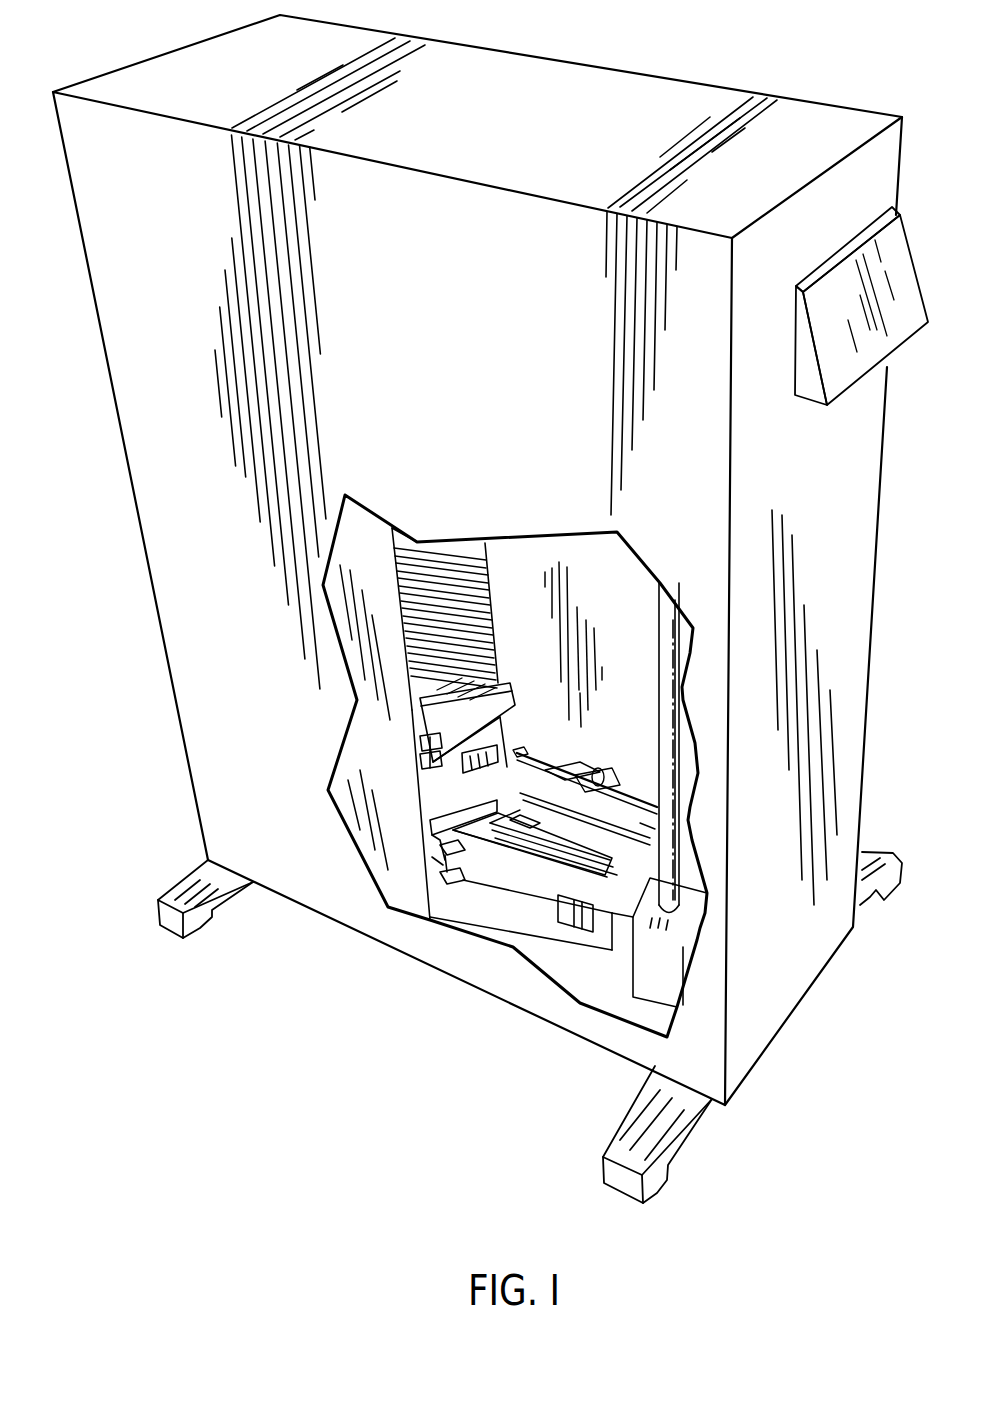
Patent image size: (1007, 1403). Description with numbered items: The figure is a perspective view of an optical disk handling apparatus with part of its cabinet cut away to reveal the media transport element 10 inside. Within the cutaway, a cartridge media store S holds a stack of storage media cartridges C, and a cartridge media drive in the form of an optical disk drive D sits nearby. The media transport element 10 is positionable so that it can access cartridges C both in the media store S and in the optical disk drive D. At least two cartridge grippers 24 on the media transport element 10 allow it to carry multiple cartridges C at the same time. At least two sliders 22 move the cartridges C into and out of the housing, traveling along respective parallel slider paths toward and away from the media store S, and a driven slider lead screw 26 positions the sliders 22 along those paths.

The media transport element 10 is at (530, 903).
The sliders 22 is at (525, 760).
The cartridge grippers 24 is at (450, 880).
The slider lead screw 26 is at (602, 857).
The cartridge media store S is at (497, 625).
The storage media cartridges C is at (430, 722).
The optical disk drive D is at (508, 735).